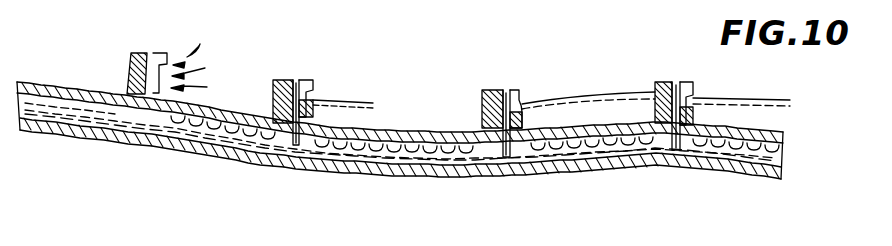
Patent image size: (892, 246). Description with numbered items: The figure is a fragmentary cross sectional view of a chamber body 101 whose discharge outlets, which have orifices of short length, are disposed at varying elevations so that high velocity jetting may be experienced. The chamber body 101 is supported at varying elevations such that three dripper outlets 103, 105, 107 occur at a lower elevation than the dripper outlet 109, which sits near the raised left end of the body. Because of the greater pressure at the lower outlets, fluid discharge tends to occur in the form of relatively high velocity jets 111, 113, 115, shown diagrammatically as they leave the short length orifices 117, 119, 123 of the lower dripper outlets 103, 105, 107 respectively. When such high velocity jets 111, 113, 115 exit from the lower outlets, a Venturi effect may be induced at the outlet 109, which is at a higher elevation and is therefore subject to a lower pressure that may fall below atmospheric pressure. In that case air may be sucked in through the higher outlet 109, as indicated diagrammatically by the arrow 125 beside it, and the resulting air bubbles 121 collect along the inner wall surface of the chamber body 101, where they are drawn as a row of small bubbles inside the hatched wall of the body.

The chamber body 101 is at (337, 170).
The dripper outlet 103 is at (280, 92).
The dripper outlet 105 is at (483, 100).
The dripper outlet 107 is at (656, 85).
The dripper outlet 109 is at (131, 54).
The high velocity jet 111 is at (330, 100).
The high velocity jet 113 is at (566, 98).
The high velocity jet 115 is at (732, 98).
The short length orifice 117 is at (299, 83).
The short length orifice 119 is at (510, 92).
The air bubbles 121 is at (247, 128).
The short length orifice 123 is at (680, 88).
The arrow 125 is at (202, 59).